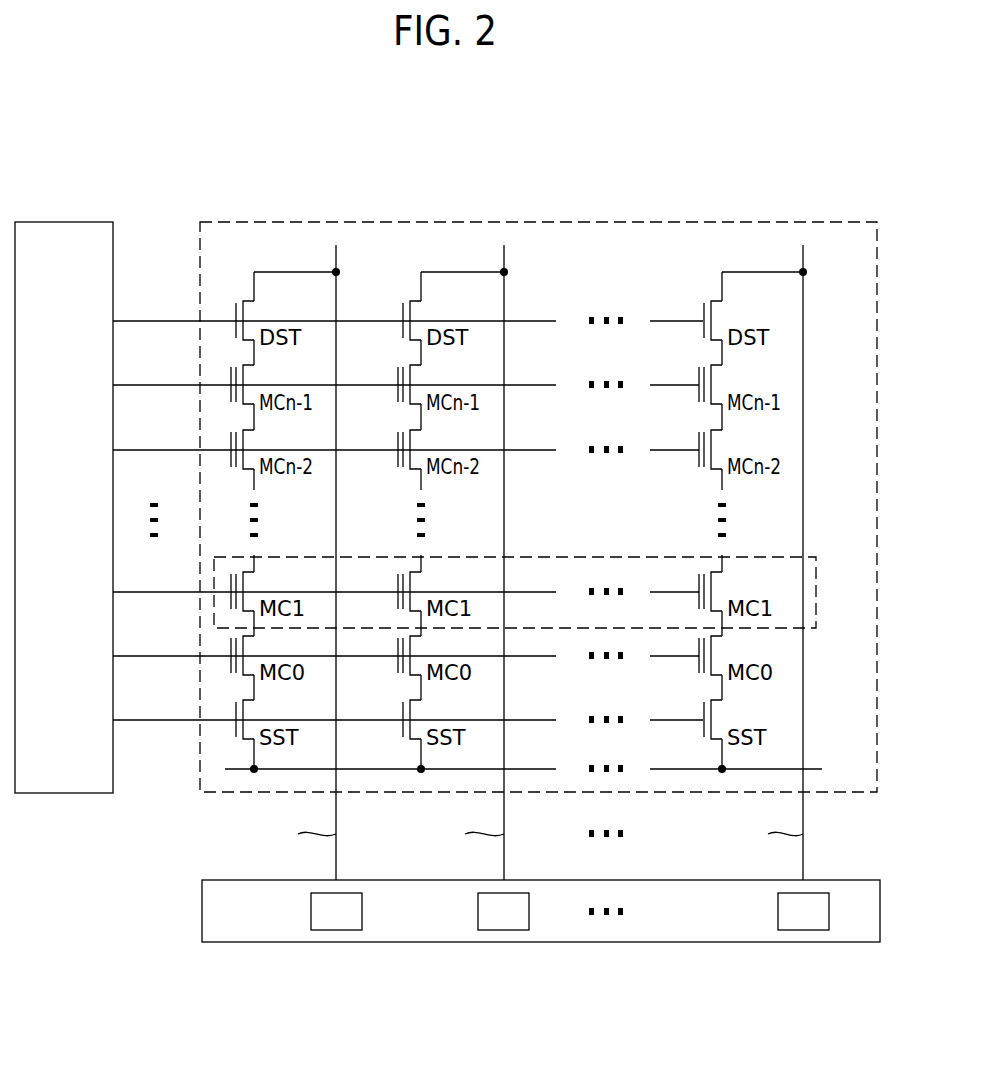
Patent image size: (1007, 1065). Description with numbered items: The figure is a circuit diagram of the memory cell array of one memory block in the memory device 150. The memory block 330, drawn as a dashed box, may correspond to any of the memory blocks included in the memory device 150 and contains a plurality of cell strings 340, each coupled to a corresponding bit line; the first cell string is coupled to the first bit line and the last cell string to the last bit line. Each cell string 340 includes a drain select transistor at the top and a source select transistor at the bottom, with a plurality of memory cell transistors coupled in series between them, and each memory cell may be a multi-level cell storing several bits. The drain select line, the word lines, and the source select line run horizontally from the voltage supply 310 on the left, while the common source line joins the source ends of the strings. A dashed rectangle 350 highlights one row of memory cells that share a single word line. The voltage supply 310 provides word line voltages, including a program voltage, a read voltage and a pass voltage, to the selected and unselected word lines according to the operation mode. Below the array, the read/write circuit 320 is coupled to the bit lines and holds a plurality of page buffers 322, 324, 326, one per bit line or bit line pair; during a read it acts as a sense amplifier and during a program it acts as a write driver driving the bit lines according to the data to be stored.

The memory device 150 is at (851, 124).
The voltage supply 310 is at (63, 222).
The read/write circuit 320 is at (202, 912).
The page buffer PB 322 is at (311, 912).
The page buffer PB 324 is at (478, 912).
The page buffer PB 326 is at (778, 912).
The memory block 330 is at (763, 222).
The cell string 340 is at (242, 283).
The page (row of memory cells) 350 is at (818, 604).